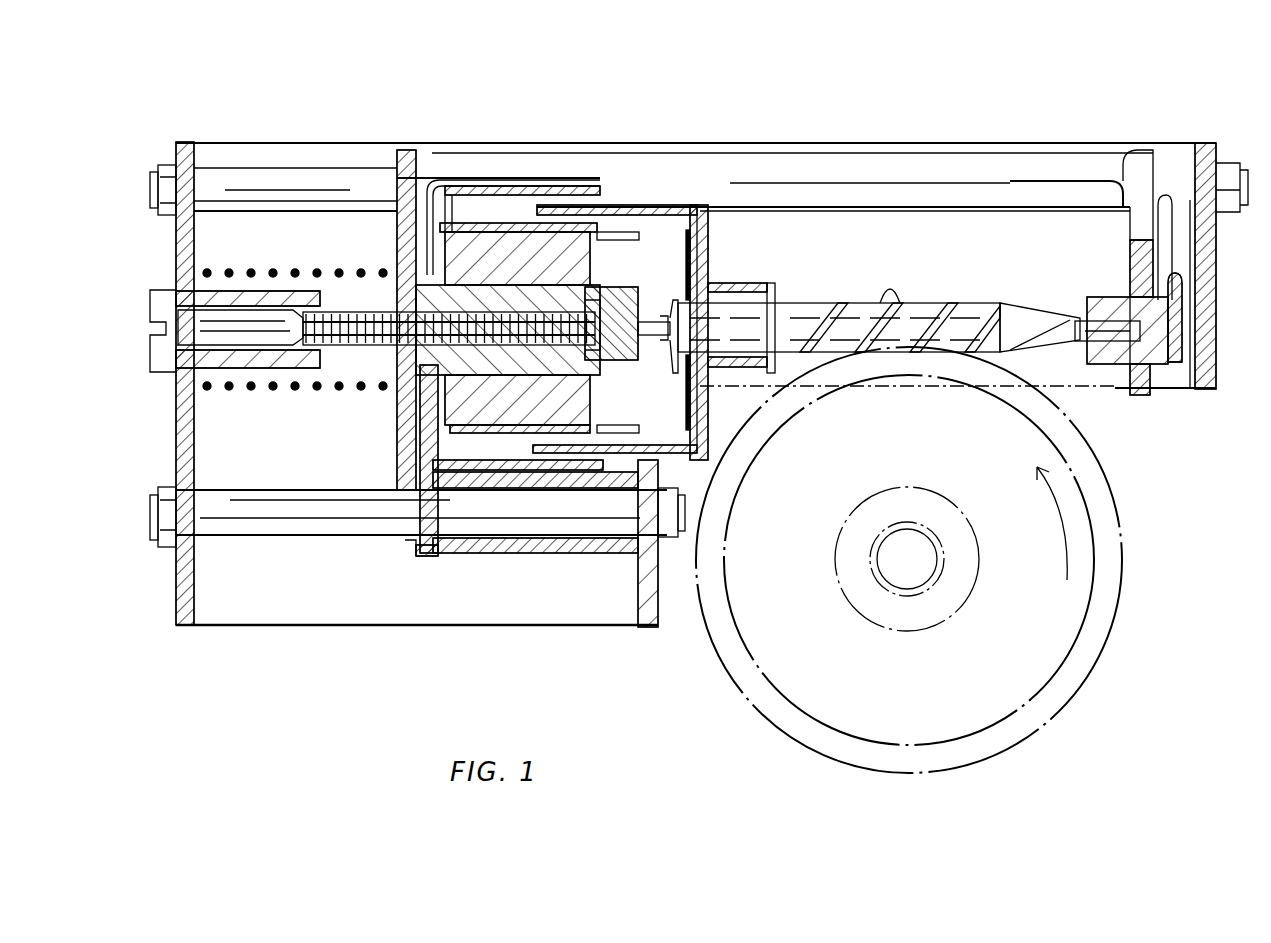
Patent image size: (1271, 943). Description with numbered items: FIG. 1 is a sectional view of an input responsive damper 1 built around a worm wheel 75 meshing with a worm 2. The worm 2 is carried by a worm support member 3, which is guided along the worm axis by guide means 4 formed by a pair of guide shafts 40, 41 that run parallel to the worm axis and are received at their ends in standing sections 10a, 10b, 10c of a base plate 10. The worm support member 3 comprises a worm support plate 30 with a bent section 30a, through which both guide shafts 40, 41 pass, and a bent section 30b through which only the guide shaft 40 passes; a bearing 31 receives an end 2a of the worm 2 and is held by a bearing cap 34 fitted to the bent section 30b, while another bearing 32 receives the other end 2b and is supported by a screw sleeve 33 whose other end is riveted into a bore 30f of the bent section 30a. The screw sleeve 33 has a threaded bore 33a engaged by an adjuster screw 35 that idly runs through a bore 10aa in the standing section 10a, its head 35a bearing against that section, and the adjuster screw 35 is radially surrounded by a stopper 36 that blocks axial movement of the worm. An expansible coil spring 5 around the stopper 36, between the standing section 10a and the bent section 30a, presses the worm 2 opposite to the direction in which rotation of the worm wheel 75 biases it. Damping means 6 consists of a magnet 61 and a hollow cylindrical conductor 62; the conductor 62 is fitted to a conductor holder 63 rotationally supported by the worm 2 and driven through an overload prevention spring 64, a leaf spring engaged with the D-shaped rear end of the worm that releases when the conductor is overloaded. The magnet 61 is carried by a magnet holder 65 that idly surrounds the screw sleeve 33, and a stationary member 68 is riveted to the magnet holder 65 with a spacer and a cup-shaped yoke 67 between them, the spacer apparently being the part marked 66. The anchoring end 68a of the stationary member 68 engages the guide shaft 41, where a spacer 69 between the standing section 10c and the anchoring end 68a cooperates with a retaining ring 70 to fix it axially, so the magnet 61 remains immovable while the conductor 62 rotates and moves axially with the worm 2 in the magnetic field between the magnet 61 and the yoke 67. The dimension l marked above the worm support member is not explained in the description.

The input responsive damper 1 is at (326, 117).
The worm 2 is at (948, 315).
The end of the worm 2a is at (1120, 355).
The other end of the worm 2b is at (672, 365).
The worm support member 3 is at (871, 125).
The guide means 4 is at (137, 199).
The coil spring 5 is at (246, 270).
The damping means 6 is at (679, 195).
The base plate 10 is at (330, 612).
The standing section 10a is at (180, 235).
The bearing 10aa is at (178, 310).
The standing section 10b is at (1210, 258).
The standing section 10c is at (657, 625).
The worm support plate 30 is at (808, 165).
The bent section 30a is at (400, 430).
The bent section 30b is at (1135, 178).
The bore 30f is at (385, 300).
The bearing 31 is at (1093, 305).
The bearing 32 is at (600, 380).
The screw sleeve 33 is at (410, 400).
The threaded bore 33a is at (552, 380).
The bearing cap 34 is at (1190, 308).
The adjuster screw 35 is at (335, 355).
The head of the adjuster screw 35a is at (178, 372).
The stopper 36 is at (185, 385).
The guide shaft 40 is at (368, 180).
The guide shaft 41 is at (292, 518).
The magnet 61 is at (510, 232).
The conductor 62 is at (648, 205).
The conductor holder 63 is at (708, 222).
The overload prevention spring 64 is at (688, 265).
The magnet holder 65 is at (615, 290).
The cup 66 is at (455, 215).
The yoke 67 is at (468, 470).
The stationary member 68 is at (398, 467).
The anchoring end 68a is at (432, 556).
The spacer 69 is at (568, 540).
The retaining ring 70 is at (420, 555).
The worm wheel 75 is at (1095, 612).
The stroke length l is at (593, 135).